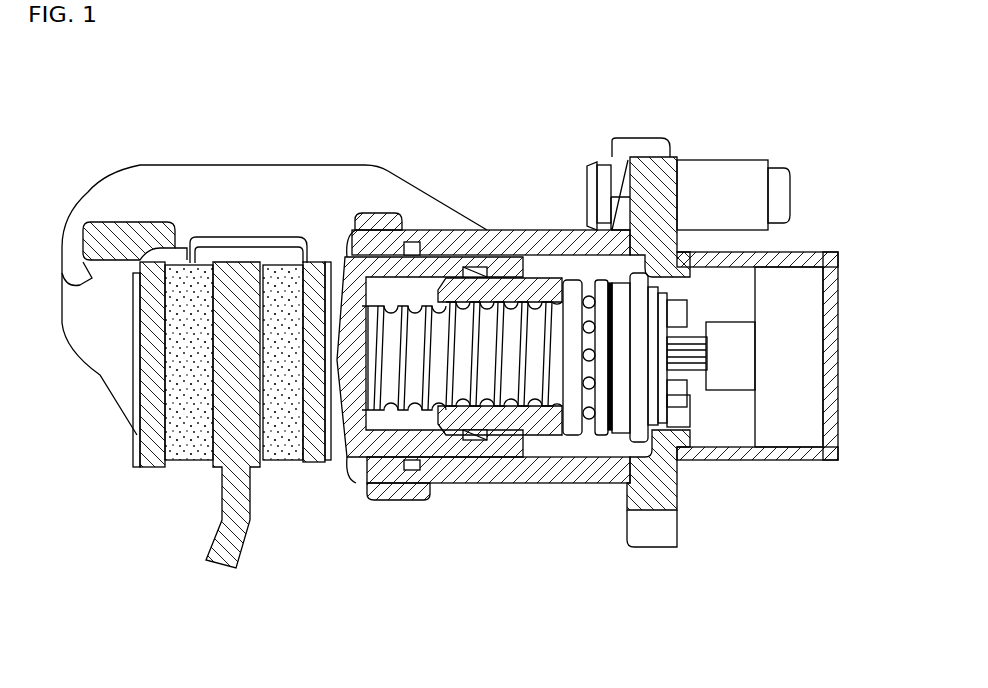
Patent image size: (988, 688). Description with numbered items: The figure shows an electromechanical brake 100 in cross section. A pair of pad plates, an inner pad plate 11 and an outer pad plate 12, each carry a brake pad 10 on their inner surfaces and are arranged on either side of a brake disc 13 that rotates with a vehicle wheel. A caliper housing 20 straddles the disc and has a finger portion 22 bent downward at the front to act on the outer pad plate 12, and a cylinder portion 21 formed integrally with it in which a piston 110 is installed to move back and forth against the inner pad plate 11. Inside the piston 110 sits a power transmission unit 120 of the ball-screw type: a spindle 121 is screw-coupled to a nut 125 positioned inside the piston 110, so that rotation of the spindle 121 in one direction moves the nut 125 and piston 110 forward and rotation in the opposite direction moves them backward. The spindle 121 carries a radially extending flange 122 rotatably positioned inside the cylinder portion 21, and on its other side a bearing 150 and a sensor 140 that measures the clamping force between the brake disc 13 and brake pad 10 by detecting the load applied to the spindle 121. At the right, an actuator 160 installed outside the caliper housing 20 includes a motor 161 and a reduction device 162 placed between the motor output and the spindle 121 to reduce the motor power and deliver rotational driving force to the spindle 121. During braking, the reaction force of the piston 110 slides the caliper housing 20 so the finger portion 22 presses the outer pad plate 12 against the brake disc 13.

The electromechanical brake 100 is at (580, 81).
The caliper housing 20 is at (365, 160).
The cylinder portion 21 is at (566, 243).
The finger portion 22 is at (102, 376).
The brake pad 10 is at (197, 464).
The inner pad plate 11 is at (317, 465).
The outer pad plate 12 is at (153, 470).
The brake disc 13 is at (232, 562).
The piston 110 is at (436, 270).
The power transmission unit 120 is at (528, 533).
The spindle 121 is at (464, 385).
The nut 125 is at (509, 425).
The flange 122 is at (571, 425).
The bearing 150 is at (603, 432).
The sensor 140 is at (672, 470).
The actuator 160 is at (898, 328).
The motor 161 is at (818, 333).
The reduction device 162 is at (746, 376).